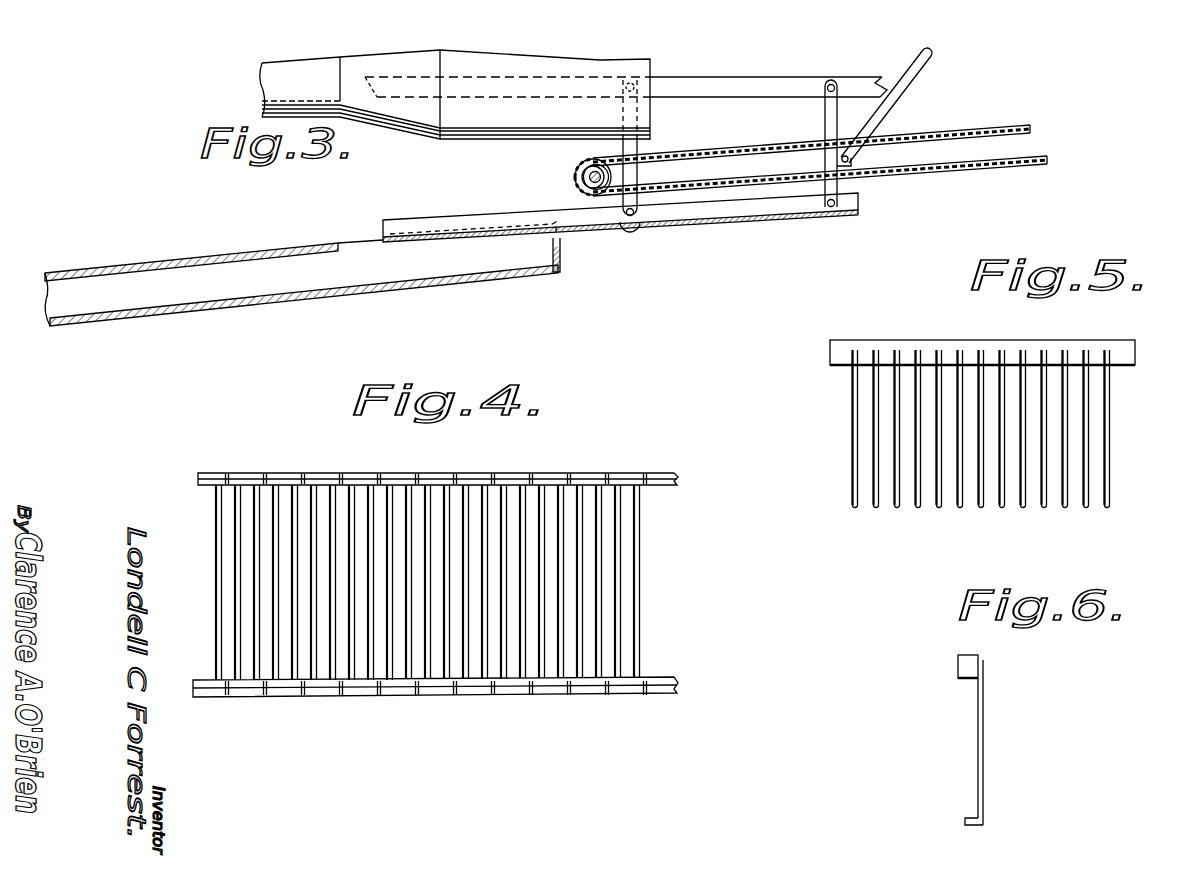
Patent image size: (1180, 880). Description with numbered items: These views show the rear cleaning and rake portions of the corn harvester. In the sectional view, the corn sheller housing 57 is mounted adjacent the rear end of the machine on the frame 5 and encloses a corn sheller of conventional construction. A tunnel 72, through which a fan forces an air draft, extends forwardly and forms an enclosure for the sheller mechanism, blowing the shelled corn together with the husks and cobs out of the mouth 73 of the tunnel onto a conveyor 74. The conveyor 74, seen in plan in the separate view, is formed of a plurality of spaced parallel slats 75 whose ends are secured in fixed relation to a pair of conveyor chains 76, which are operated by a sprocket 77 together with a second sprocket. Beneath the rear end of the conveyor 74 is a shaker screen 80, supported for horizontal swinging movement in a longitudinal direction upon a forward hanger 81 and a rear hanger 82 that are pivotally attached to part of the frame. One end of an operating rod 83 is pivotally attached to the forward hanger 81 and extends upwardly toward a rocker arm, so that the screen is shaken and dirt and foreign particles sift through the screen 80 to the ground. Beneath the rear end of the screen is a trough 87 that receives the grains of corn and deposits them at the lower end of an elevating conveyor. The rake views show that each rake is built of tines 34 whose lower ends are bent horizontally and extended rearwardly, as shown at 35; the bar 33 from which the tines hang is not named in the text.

In FIG. 3, the frame 5 is at (797, 77).
In FIG. 5, the comb bar 33 is at (970, 340).
In FIG. 6, the comb bar 33 is at (958, 661).
In FIG. 5, the tines 34 is at (852, 462).
In FIG. 6, the tines 34 is at (983, 752).
In FIG. 6, the bent lower ends of tines 35 is at (965, 818).
In FIG. 3, the corn sheller housing 57 is at (282, 87).
In FIG. 3, the tunnel 72 is at (518, 118).
In FIG. 3, the mouth of the tunnel 73 is at (662, 63).
In FIG. 3, the conveyor 74 is at (710, 151).
In FIG. 4, the conveyor 74 is at (618, 641).
In FIG. 4, the slats 75 is at (622, 546).
In FIG. 3, the conveyor chains 76 is at (750, 151).
In FIG. 4, the conveyor chains 76 is at (546, 472).
In FIG. 3, the sprocket 77 is at (622, 220).
In FIG. 3, the shaker screen 80 is at (778, 218).
In FIG. 3, the forward hanger 81 is at (826, 118).
In FIG. 3, the rear hanger 82 is at (632, 172).
In FIG. 3, the operating rod 83 is at (906, 90).
In FIG. 3, the trough 87 is at (400, 284).